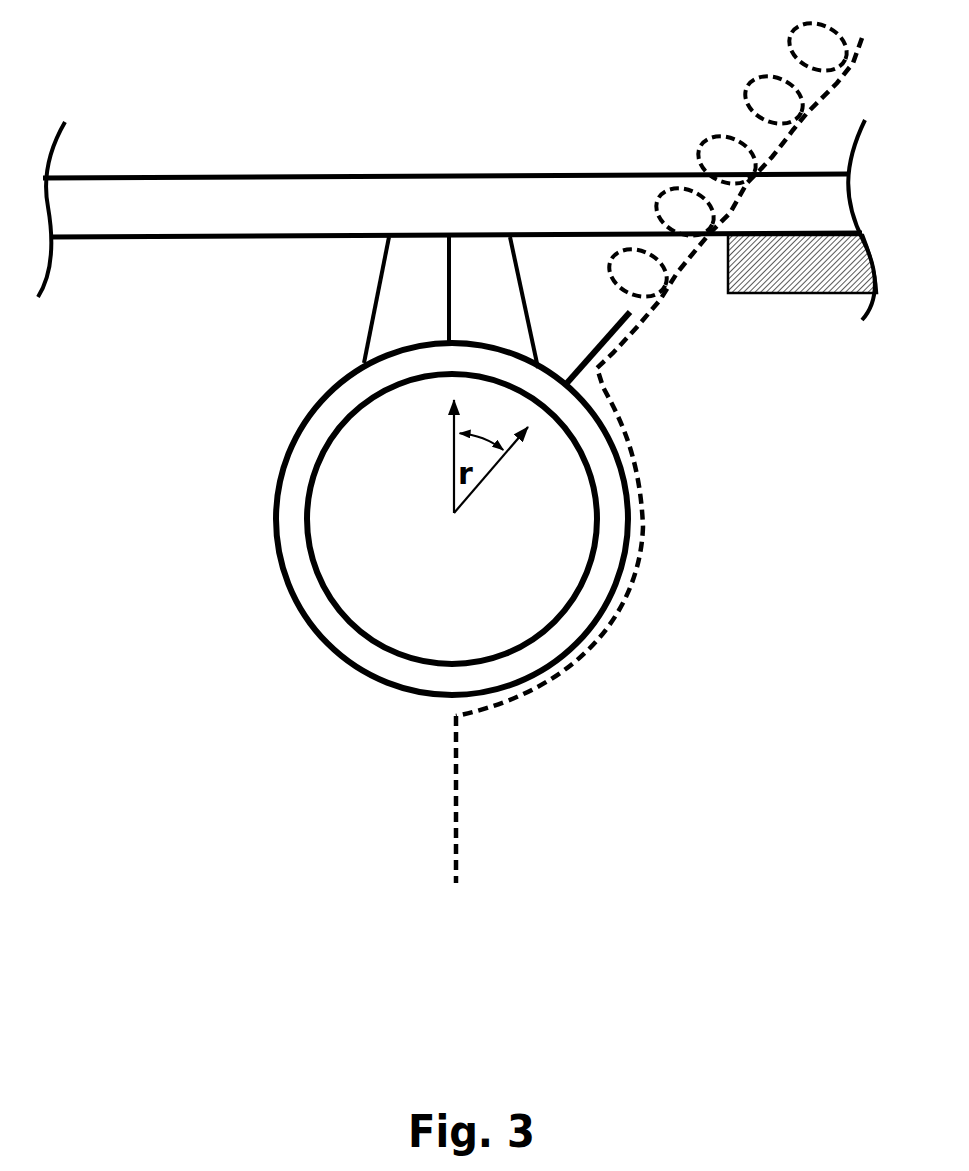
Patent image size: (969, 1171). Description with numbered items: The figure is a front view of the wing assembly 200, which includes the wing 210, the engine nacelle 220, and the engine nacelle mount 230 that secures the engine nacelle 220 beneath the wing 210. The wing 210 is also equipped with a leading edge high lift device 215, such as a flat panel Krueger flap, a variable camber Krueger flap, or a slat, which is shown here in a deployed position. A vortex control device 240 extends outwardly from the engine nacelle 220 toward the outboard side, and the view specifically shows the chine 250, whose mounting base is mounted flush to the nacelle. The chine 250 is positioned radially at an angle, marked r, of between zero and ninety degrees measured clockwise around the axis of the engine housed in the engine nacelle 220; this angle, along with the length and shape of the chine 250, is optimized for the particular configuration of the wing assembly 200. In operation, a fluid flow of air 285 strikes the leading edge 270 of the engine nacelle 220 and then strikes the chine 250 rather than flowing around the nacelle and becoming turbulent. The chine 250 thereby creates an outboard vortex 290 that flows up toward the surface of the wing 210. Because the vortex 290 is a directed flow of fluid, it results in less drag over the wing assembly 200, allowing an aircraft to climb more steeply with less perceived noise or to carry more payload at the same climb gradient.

The wing assembly 200 is at (207, 903).
The wing 210 is at (360, 205).
The leading edge high lift device 215 is at (820, 270).
The engine nacelle 220 is at (302, 613).
The engine nacelle mount 230 is at (407, 297).
The vortex control device 240 is at (575, 348).
The chine 250 is at (607, 335).
The leading edge 270 is at (442, 700).
The fluid flow of air 285 is at (475, 780).
The outboard vortex 290 is at (700, 287).